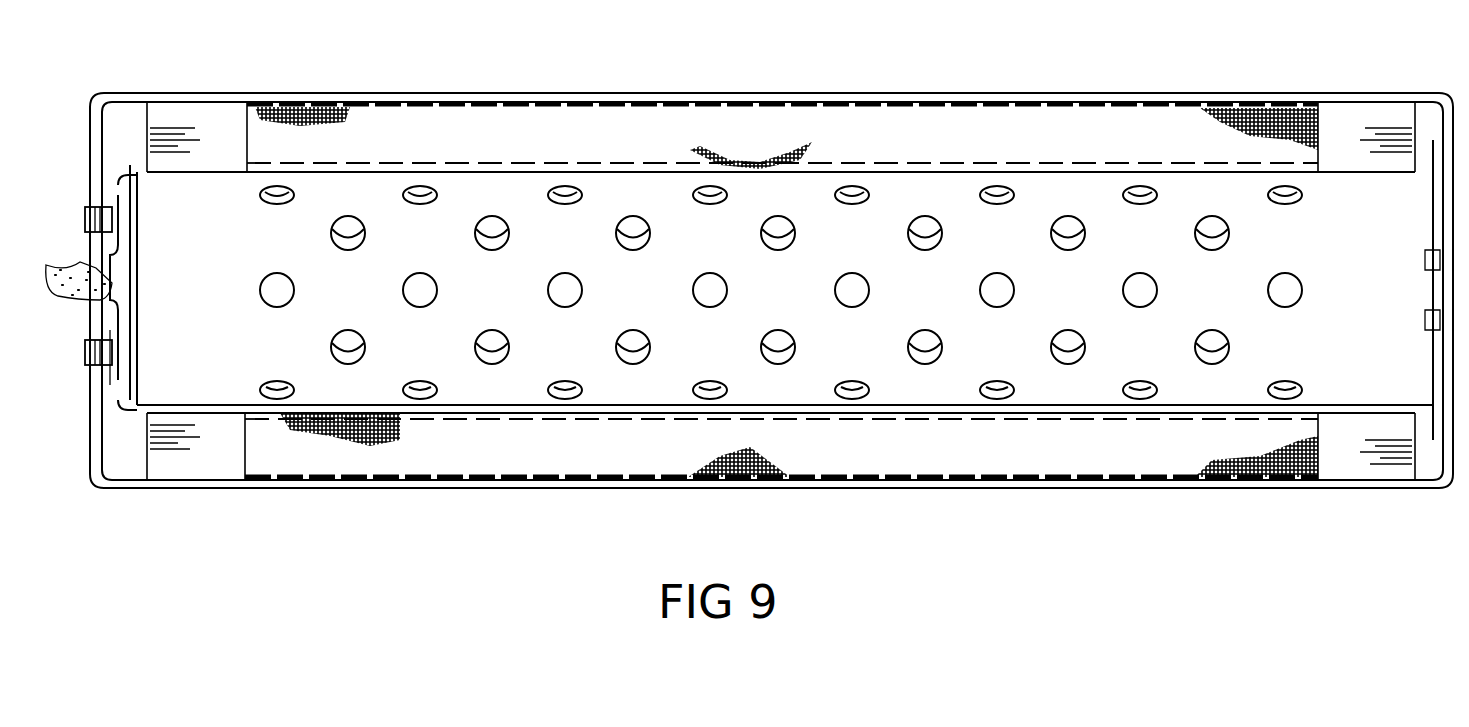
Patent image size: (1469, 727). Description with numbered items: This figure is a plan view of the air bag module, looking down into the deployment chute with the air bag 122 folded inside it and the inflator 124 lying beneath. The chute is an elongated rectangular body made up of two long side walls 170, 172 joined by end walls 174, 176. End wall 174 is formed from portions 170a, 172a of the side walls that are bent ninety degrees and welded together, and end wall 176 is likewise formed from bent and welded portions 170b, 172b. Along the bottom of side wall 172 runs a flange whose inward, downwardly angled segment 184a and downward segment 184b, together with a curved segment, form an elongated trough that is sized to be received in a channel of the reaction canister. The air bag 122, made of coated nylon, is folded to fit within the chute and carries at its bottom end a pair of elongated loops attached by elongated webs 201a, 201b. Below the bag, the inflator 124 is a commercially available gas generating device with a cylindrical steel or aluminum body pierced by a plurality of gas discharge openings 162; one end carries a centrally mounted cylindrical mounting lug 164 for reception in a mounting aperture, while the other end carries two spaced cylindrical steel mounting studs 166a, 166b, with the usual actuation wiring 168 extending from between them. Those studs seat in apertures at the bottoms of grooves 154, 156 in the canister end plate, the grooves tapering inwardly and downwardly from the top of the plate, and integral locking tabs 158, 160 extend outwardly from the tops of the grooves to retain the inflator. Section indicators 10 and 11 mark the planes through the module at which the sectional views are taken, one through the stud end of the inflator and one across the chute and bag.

The section line 10- 10 is at (80, 85).
The section line 11- 11 is at (378, 82).
The air bag 122 is at (803, 95).
The inflator 124 is at (540, 174).
The groove 154 is at (132, 192).
The groove 156 is at (135, 387).
The locking tab 158 is at (130, 232).
The locking tab 160 is at (136, 348).
The gas discharge openings 162 is at (625, 243).
The mounting lug 164 is at (942, 345).
The mounting stud 166a is at (122, 219).
The mounting stud 166b is at (122, 356).
The actuation wiring 168 is at (100, 290).
The side wall 170 is at (655, 480).
The side wall portion 170a is at (1452, 482).
The side wall portion 170b is at (95, 482).
The side wall 172 is at (598, 93).
The side wall portion 172a is at (1455, 108).
The side wall portion 172b is at (95, 100).
The end wall 174 is at (104, 262).
The end wall 176 is at (1445, 232).
The inward, downwardly angled segment 184a is at (1333, 470).
The downward segment 184b is at (1340, 118).
The elongated web 201a is at (347, 118).
The elongated web 201b is at (362, 456).